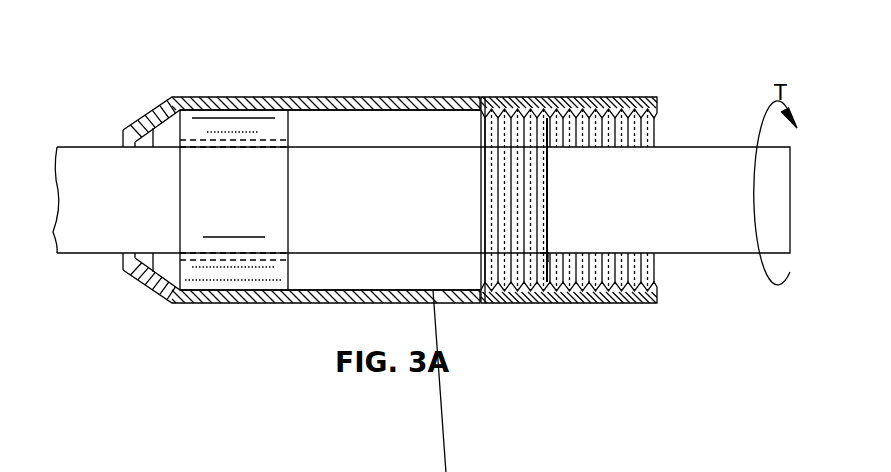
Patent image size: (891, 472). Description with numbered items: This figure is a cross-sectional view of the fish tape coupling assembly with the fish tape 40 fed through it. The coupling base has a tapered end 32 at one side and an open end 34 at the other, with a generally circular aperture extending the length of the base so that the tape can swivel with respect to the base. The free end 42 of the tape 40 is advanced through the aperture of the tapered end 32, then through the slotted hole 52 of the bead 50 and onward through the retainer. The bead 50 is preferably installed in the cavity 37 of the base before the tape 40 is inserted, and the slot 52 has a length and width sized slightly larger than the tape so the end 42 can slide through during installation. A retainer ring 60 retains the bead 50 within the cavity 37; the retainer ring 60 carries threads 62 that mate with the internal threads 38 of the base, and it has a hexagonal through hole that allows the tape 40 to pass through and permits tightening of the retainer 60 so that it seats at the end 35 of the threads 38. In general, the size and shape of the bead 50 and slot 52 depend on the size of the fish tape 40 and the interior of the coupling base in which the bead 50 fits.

The tapered end 32 is at (276, 269).
The open end 34 is at (576, 204).
The end of threads 35 is at (554, 168).
The cavity 37 is at (320, 127).
The internal threads 38 is at (523, 112).
The tape 40 is at (155, 145).
The free end 42 is at (790, 208).
The bead 50 is at (215, 122).
The slotted hole 52 is at (236, 303).
The retainer ring 60 is at (548, 182).
The threads 62 is at (548, 256).